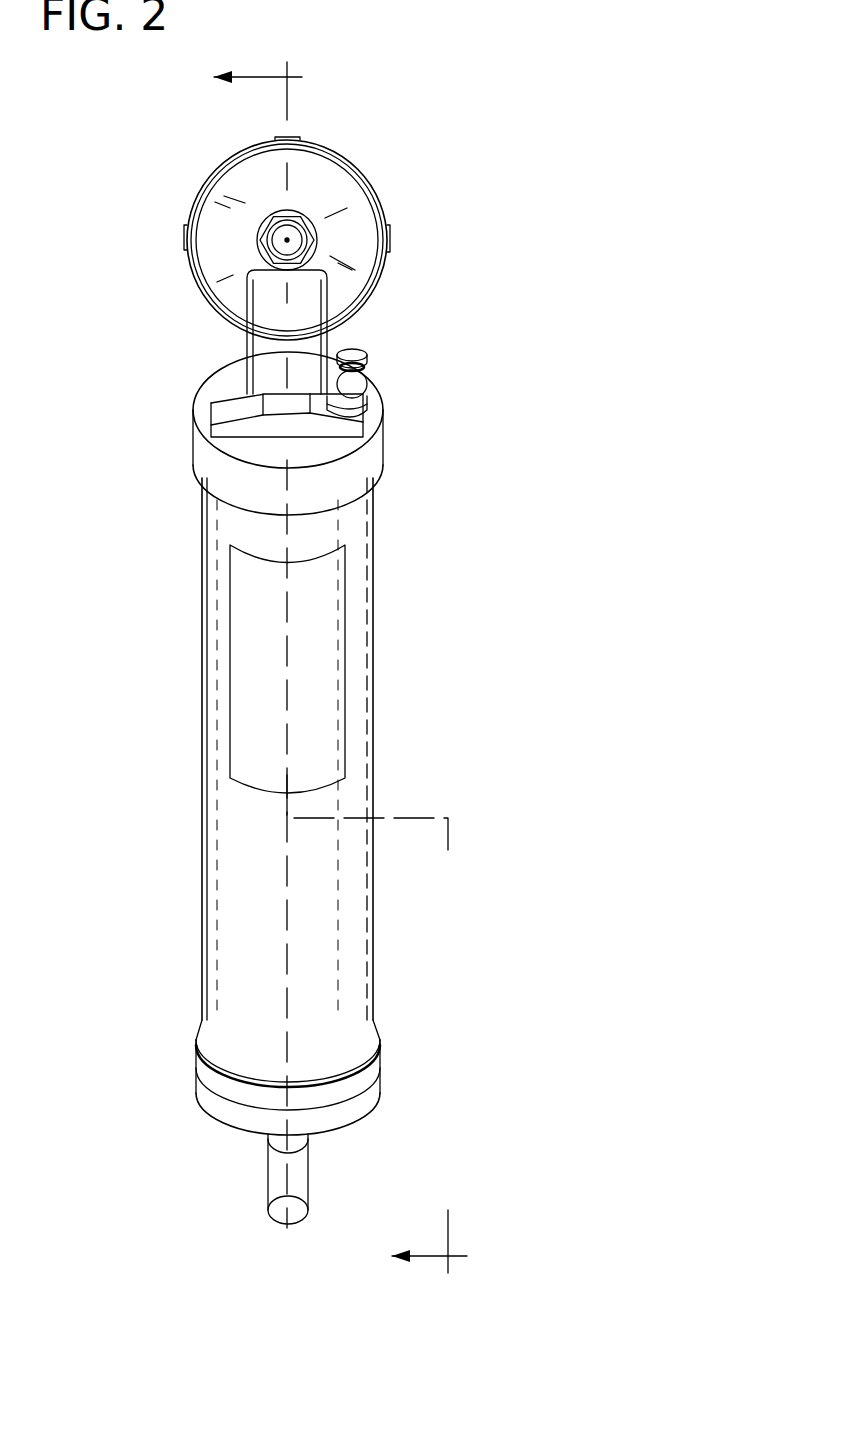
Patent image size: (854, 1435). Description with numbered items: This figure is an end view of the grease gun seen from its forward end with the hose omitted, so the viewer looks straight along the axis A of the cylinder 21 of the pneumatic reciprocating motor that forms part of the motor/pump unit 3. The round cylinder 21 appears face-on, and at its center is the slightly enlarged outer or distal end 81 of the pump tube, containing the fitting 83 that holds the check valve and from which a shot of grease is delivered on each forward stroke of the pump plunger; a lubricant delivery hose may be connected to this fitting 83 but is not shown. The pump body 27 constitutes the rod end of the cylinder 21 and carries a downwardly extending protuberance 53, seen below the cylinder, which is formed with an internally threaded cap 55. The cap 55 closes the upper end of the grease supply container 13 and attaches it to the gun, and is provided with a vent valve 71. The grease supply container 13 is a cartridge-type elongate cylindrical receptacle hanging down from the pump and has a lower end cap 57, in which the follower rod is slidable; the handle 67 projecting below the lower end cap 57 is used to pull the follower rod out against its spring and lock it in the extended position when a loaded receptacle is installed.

The motor/pump unit 3 is at (442, 163).
The grease supply container 13 is at (202, 656).
The cylinder 21 is at (218, 168).
The pump body 27 is at (238, 255).
The protuberance 53 is at (307, 347).
The cap 55 is at (196, 434).
The lower end cap 57 is at (197, 1066).
The handle 67 is at (270, 1221).
The vent valve 71 is at (358, 383).
The outer or distal end 81 is at (262, 218).
The fitting 83 is at (275, 240).
The axis of the cylinder A is at (300, 241).